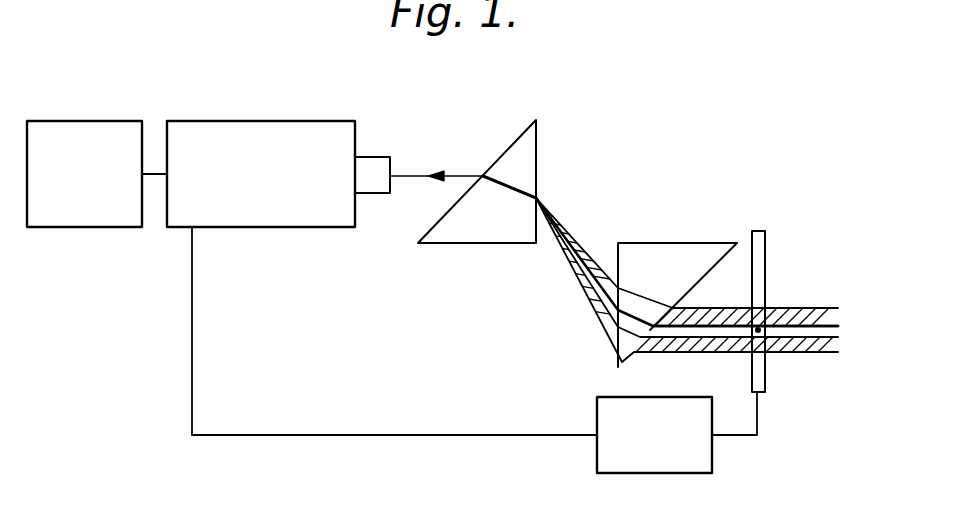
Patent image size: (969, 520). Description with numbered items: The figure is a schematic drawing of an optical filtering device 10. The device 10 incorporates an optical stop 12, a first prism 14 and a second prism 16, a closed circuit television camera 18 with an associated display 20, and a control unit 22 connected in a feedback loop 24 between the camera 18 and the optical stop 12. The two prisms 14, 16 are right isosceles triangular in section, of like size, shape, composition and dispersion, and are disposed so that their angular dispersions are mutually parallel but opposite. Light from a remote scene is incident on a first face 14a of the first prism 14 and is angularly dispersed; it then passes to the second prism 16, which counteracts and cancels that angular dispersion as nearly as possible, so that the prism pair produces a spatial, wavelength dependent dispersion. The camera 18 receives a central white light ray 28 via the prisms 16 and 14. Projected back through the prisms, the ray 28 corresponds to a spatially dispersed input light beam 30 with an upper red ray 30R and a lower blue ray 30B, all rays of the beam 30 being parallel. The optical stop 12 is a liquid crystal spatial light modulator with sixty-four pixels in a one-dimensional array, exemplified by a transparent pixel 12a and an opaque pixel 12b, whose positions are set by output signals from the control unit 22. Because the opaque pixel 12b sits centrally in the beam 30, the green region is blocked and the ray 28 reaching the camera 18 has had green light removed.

The optical filtering device 10 is at (697, 166).
The optical stop 12 is at (766, 258).
The transparent pixel 12a is at (765, 312).
The opaque pixel 12b is at (765, 335).
The first prism 14 is at (640, 243).
The first face of the first prism 14a is at (720, 270).
The second prism 16 is at (537, 158).
The closed circuit television camera 18 is at (305, 121).
The display 20 is at (97, 121).
The control unit 22 is at (652, 474).
The feedback loop 24 is at (410, 436).
The central white light ray 28 is at (413, 171).
The spatially dispersed input light beam 30 is at (808, 332).
The upper red ray 30R is at (838, 306).
The lower blue ray 30B is at (838, 355).